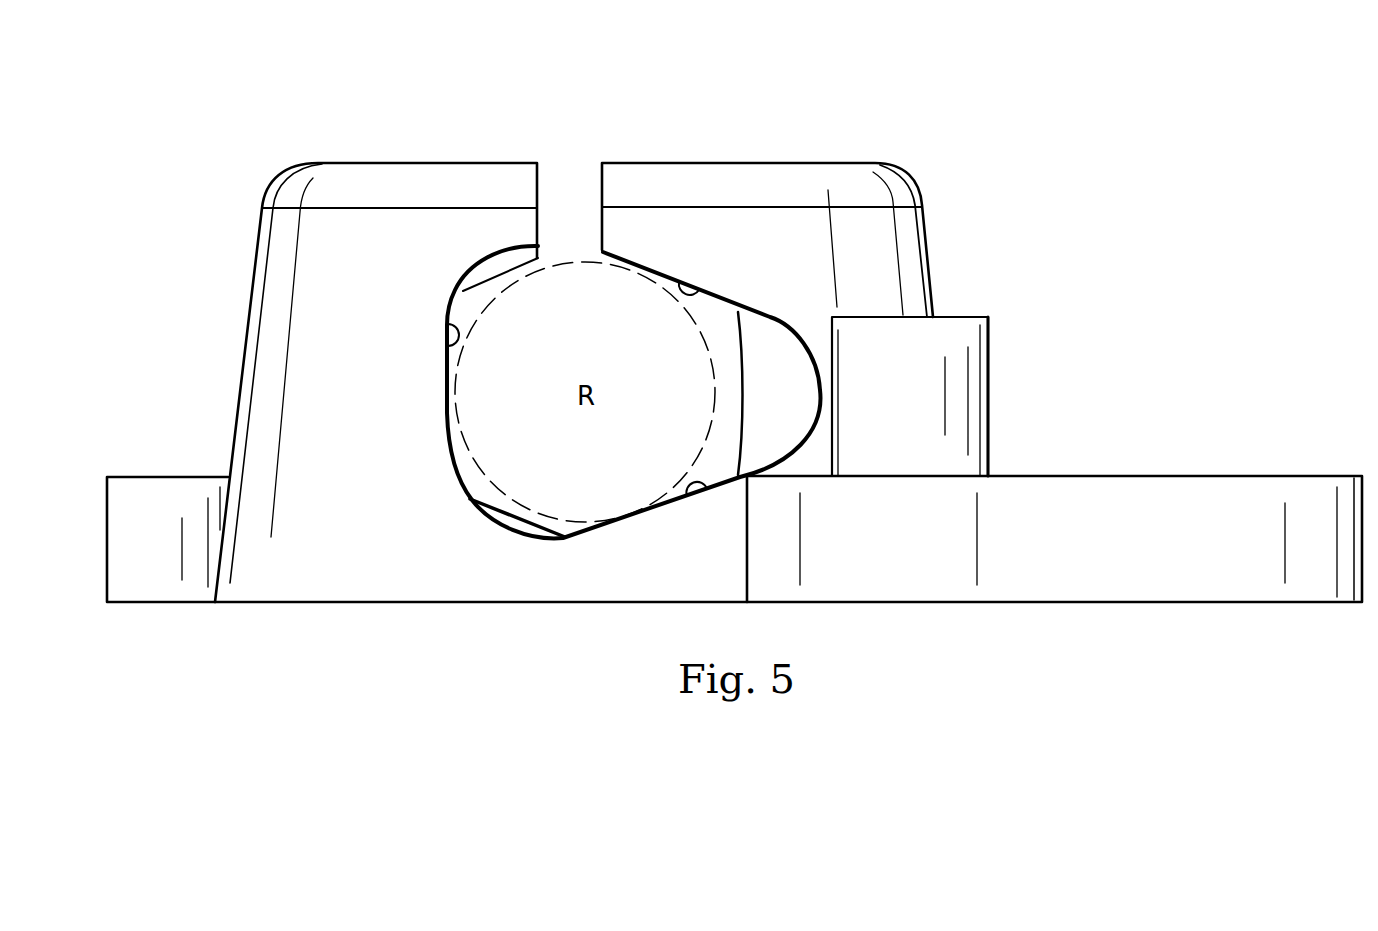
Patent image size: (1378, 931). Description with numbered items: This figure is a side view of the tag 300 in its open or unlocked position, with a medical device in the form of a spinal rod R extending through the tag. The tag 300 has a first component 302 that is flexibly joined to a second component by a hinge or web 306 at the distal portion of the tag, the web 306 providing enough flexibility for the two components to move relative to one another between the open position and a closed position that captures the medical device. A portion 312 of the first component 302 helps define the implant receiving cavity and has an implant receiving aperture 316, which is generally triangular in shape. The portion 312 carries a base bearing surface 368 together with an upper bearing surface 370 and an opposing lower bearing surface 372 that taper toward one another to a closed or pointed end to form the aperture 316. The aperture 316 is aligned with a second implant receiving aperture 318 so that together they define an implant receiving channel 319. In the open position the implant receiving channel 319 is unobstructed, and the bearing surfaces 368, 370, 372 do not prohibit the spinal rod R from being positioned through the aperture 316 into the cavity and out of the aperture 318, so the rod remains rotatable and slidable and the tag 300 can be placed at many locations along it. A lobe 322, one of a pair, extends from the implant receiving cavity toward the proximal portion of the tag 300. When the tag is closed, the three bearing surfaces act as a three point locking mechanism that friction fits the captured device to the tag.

The tag 300 is at (289, 96).
The first component 302 is at (330, 608).
The web 306 is at (107, 537).
The portion 312 is at (452, 598).
The implant receiving aperture 316 is at (437, 435).
The implant receiving aperture 318 is at (493, 490).
The implant receiving channel 319 is at (733, 373).
The lobe 322 is at (1149, 557).
The base bearing surface 368 is at (447, 324).
The upper bearing surface 370 is at (690, 281).
The lower bearing surface 372 is at (690, 500).